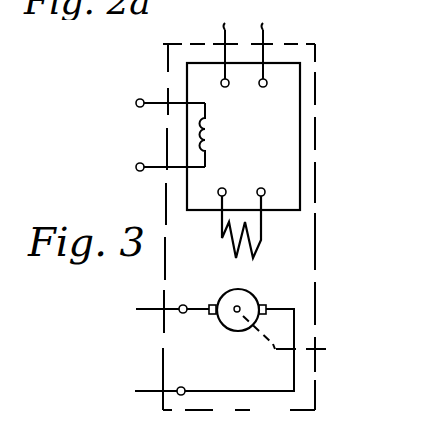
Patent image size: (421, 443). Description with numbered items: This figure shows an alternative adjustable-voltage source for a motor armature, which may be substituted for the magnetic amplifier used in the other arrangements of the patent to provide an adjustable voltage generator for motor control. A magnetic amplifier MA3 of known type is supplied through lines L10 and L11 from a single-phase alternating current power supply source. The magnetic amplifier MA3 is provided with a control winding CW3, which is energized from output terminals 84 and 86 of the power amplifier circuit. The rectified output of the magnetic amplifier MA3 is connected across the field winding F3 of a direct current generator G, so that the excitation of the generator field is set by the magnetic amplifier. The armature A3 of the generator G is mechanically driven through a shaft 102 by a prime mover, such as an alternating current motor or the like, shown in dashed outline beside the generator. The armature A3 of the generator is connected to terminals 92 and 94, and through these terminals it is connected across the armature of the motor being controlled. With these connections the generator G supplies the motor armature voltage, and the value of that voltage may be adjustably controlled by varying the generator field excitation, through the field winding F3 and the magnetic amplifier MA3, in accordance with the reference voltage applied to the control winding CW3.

The output terminal 86 is at (136, 102).
The output terminal 84 is at (136, 166).
The terminal 92 is at (184, 313).
The terminal 94 is at (183, 387).
The shaft 102 is at (271, 346).
The line L10 is at (227, 48).
The line L11 is at (269, 48).
The control winding CW3 is at (214, 127).
The magnetic amplifier MA3 is at (270, 154).
The field winding F3 is at (257, 247).
The direct current generator G is at (211, 295).
The armature A3 is at (254, 292).